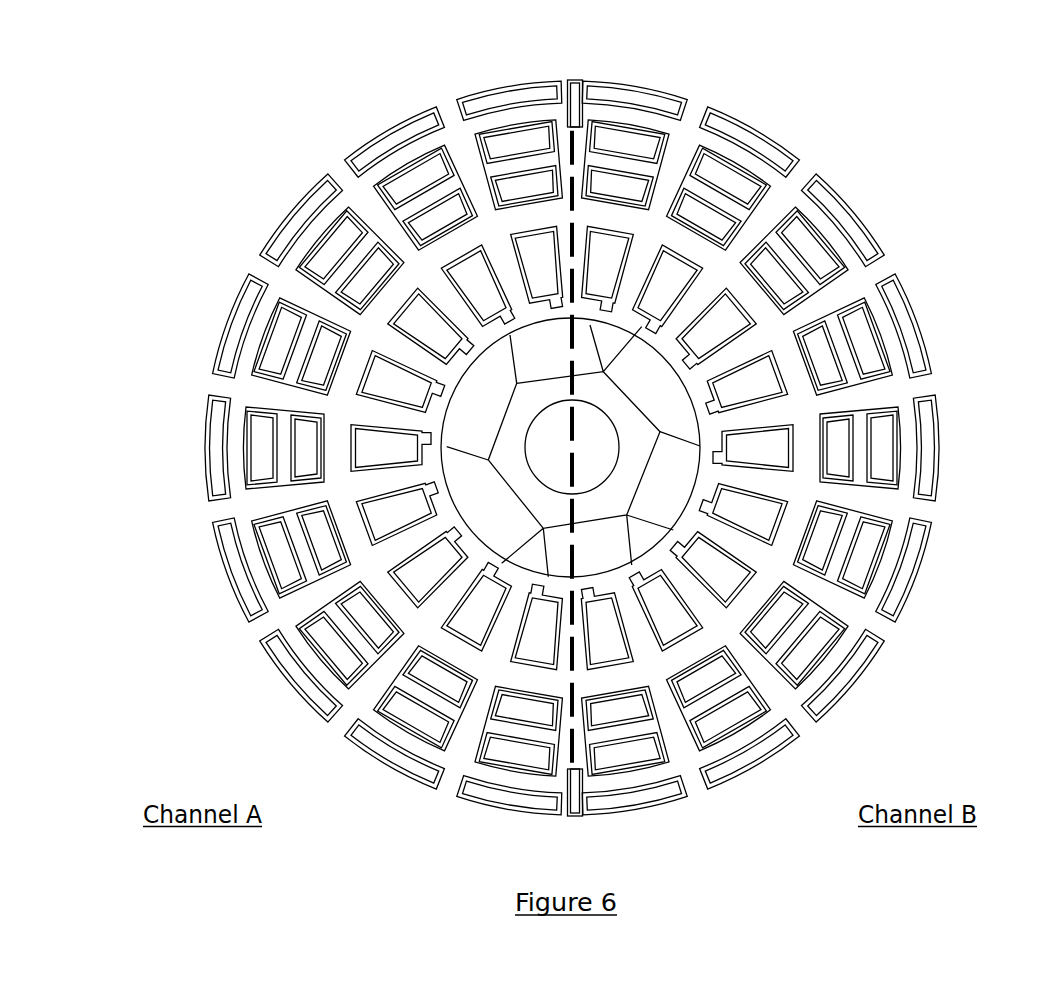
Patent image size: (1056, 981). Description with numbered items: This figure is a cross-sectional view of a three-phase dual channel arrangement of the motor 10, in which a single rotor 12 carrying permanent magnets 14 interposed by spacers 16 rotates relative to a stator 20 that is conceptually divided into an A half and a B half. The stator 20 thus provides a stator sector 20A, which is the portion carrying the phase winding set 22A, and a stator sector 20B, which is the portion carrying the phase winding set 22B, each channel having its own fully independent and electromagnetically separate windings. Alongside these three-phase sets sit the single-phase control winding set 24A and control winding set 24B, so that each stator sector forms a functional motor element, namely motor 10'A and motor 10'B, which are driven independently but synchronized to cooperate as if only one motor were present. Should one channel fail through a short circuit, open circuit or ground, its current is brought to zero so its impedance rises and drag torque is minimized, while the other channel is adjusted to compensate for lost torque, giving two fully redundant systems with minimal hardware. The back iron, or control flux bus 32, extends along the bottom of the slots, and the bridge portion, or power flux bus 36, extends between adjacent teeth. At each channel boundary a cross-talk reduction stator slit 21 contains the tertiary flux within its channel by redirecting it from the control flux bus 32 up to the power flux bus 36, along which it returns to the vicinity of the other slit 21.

The motor 10 is at (874, 187).
The stator 20 is at (180, 151).
The stator sector A 20A is at (228, 258).
The stator sector B 20B is at (925, 590).
The phase winding set A 22A is at (415, 318).
The phase winding set B 22B is at (736, 580).
The control winding set A 24A is at (262, 362).
The control winding set B 24B is at (765, 700).
The rotor 12 is at (668, 356).
The permanent magnets 14 is at (668, 382).
The spacers 16 is at (690, 431).
The stator slit 21 is at (571, 80).
The back iron 32 is at (912, 444).
The power flux bus 36 is at (782, 556).
The motor A 10'A is at (421, 795).
The motor B 10'B is at (698, 795).